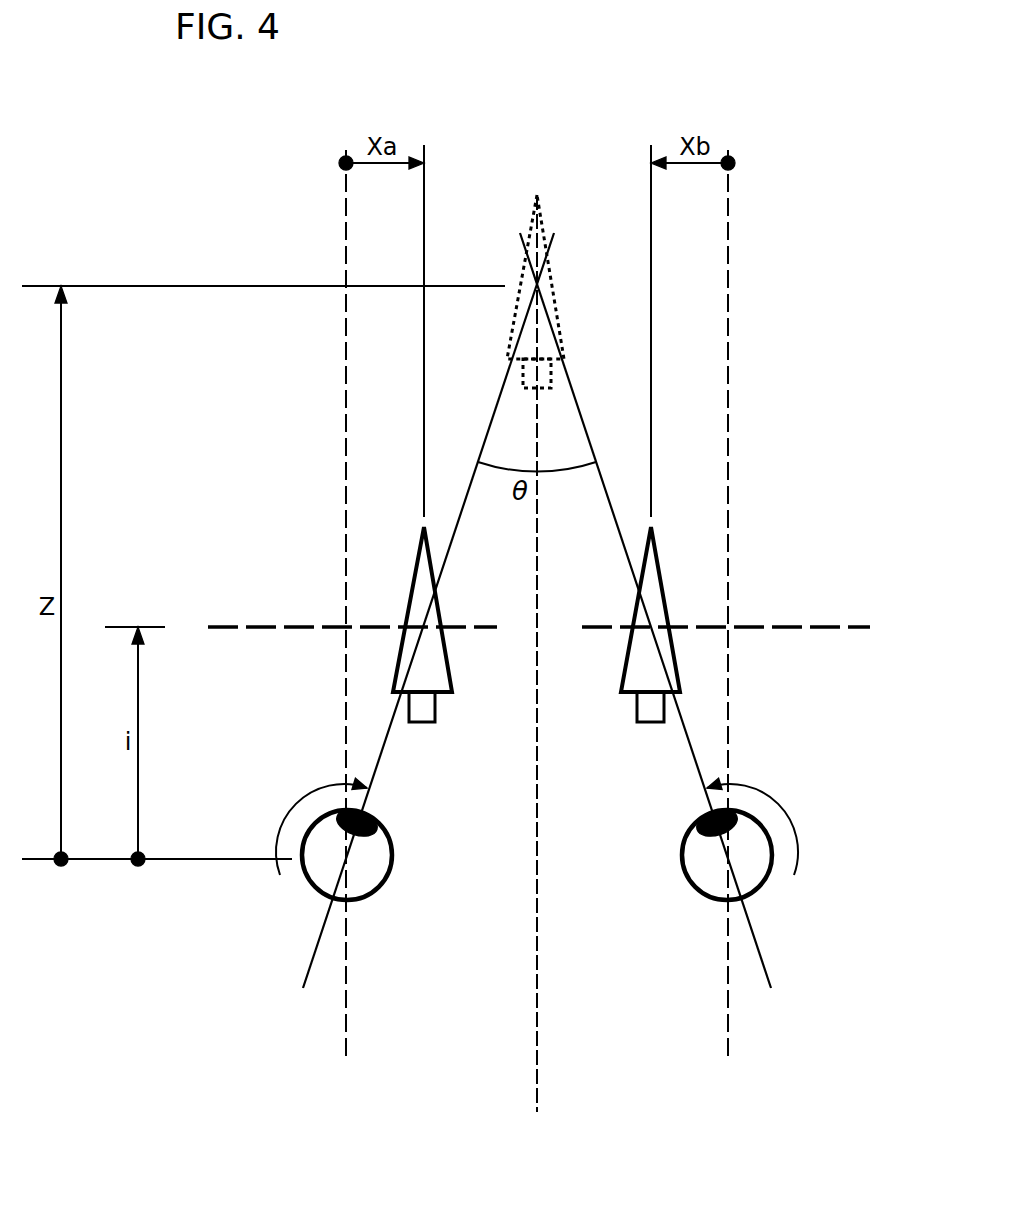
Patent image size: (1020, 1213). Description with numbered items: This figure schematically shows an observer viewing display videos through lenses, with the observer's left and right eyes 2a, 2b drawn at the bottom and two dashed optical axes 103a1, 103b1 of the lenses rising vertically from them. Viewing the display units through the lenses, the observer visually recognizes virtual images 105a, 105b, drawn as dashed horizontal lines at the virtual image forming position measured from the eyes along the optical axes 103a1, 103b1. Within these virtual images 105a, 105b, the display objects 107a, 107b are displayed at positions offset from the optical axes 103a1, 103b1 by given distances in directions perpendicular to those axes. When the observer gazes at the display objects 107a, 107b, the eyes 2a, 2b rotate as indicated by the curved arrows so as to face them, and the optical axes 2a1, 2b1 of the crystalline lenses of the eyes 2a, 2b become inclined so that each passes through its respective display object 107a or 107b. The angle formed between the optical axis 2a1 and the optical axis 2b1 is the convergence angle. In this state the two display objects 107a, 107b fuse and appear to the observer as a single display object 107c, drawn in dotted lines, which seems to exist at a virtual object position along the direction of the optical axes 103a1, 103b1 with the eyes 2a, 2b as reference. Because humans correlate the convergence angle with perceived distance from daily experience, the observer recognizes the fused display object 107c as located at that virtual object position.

The left eye 2a is at (317, 890).
The right eye 2b is at (760, 890).
The optical axis of the crystalline lens of the left eye 2a1 is at (310, 968).
The optical axis of the crystalline lens of the right eye 2b1 is at (767, 968).
The optical axis of the left lens 103a1 is at (343, 1030).
The optical axis of the right lens 103b1 is at (730, 1030).
The left virtual image 105a is at (267, 625).
The right virtual image 105b is at (783, 625).
The left display object 107a is at (415, 563).
The right display object 107b is at (660, 563).
The fused display object 107c is at (543, 213).